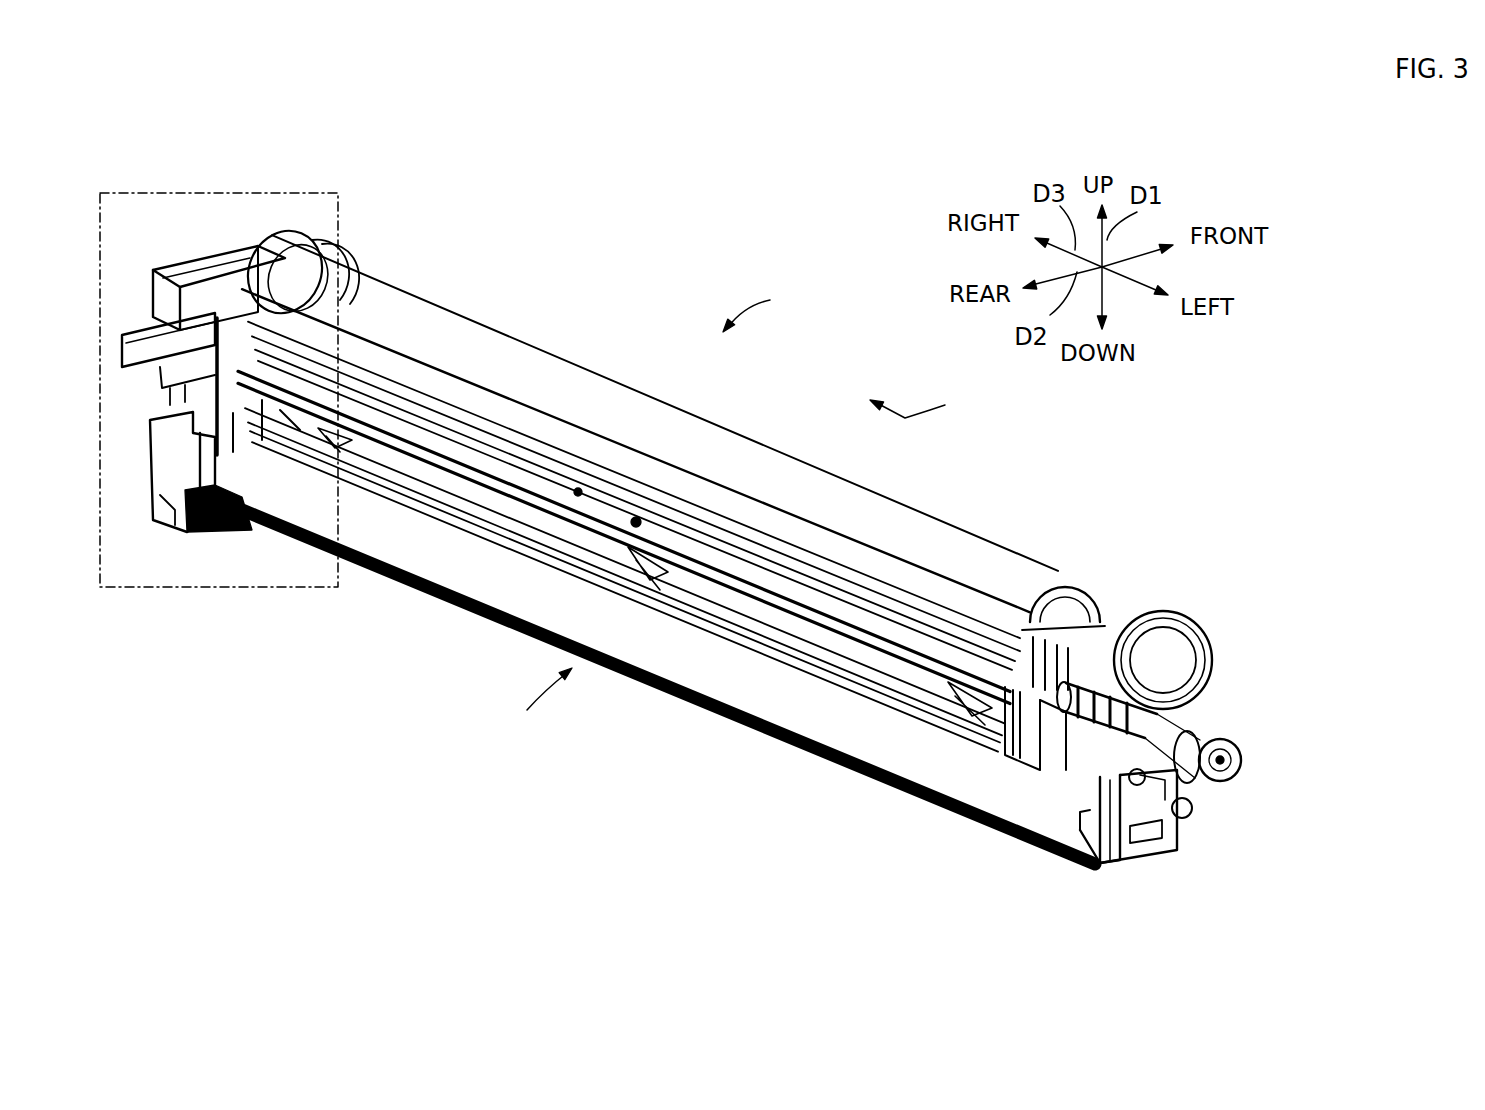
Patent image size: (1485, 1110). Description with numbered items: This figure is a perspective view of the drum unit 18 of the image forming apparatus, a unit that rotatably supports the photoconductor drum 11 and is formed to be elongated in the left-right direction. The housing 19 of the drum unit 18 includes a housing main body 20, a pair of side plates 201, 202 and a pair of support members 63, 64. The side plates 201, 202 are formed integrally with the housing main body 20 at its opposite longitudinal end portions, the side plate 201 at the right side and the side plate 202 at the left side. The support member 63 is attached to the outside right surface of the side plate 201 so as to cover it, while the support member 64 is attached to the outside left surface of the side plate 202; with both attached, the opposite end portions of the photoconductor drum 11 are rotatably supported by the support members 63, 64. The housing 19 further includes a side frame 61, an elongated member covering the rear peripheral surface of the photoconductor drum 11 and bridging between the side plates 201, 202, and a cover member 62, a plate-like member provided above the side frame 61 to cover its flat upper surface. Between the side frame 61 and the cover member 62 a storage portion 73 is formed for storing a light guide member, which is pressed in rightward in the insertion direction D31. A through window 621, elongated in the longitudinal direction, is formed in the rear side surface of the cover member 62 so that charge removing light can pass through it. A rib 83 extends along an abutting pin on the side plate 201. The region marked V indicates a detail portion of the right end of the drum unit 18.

The photoconductor drum 11 is at (587, 370).
The drum unit 18 is at (764, 303).
The housing 19 is at (533, 700).
The housing main body 20 is at (463, 567).
The side frame 61 is at (412, 432).
The cover member 62 is at (473, 393).
The through window 621 is at (510, 440).
The support member 63 is at (233, 248).
The support member 64 is at (1147, 613).
The storage portion 73 is at (417, 357).
The rib 83 is at (1120, 612).
The side plate 201 is at (245, 250).
The side plate 202 is at (1078, 585).
The enlarged view region V is at (338, 193).
The insertion direction D31 is at (928, 404).